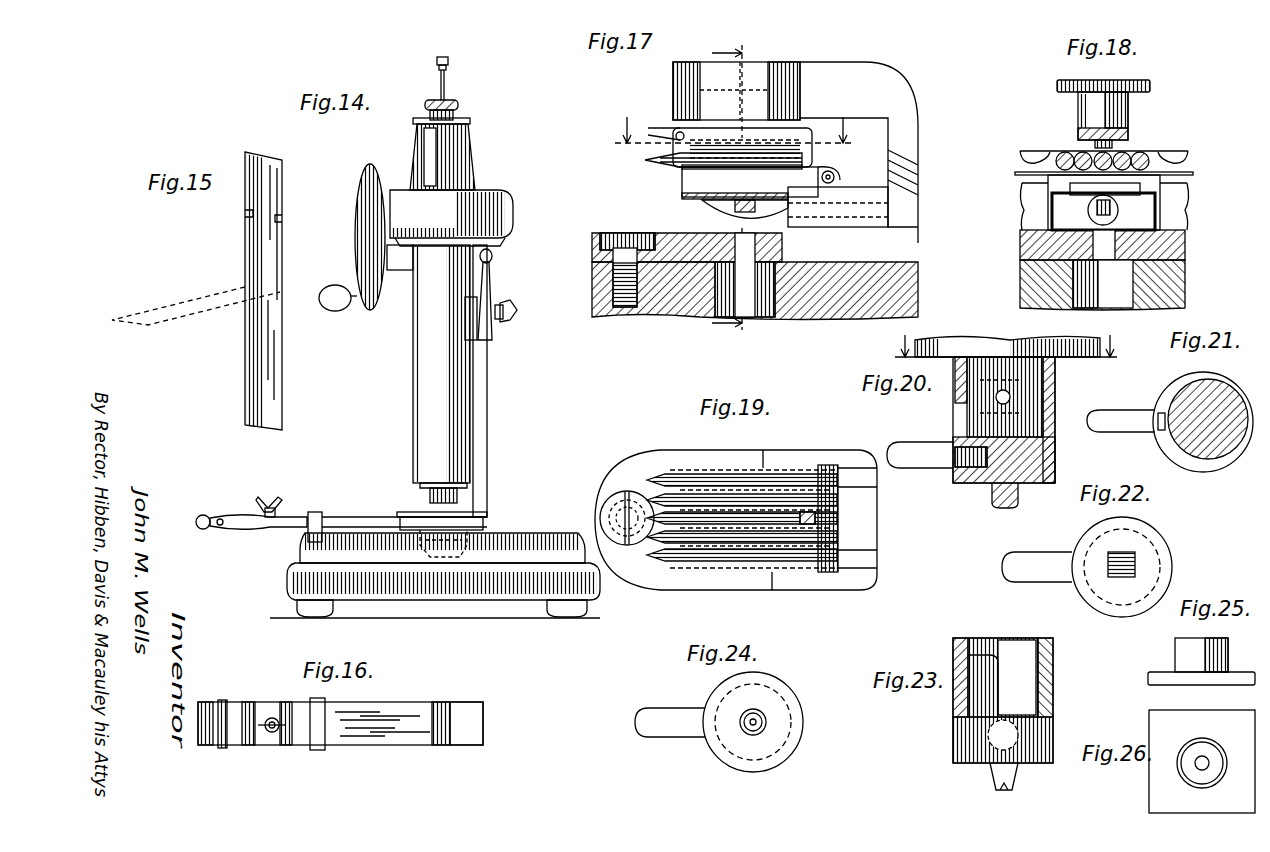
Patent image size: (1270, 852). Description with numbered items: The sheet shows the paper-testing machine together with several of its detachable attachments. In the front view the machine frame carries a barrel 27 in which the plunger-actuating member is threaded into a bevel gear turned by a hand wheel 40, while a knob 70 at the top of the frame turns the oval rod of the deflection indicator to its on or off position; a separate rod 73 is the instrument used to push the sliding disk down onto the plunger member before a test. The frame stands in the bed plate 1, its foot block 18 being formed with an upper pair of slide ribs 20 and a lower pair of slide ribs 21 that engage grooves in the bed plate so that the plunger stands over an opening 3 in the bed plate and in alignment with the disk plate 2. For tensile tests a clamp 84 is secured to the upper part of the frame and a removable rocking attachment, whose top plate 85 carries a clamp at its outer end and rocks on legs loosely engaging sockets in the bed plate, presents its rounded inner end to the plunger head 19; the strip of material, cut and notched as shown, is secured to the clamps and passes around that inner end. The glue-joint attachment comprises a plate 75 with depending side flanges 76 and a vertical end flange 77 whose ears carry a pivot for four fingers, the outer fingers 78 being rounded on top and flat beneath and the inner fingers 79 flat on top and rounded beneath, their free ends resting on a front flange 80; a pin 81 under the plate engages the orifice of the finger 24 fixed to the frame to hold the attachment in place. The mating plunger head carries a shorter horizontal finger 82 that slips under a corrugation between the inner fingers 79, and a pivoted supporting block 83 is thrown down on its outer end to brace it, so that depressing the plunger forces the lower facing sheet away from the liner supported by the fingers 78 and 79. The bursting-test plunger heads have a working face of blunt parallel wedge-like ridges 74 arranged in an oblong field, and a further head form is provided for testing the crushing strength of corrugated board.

In FIG. 14, the base 1 is at (433, 575).
In FIG. 17, the base 1 is at (592, 292).
In FIG. 18, the base 1 is at (1020, 288).
In FIG. 19, the base 1 is at (812, 452).
In FIG. 17, the disk plate 2 is at (592, 246).
In FIG. 18, the disk plate 2 is at (1185, 246).
In FIG. 19, the disk plate 2 is at (655, 452).
In FIG. 17, the slot 3 is at (745, 250).
In FIG. 17, the arm 18 is at (905, 92).
In FIG. 14, the block 19 is at (460, 496).
In FIG. 14, the upper slide ribs 20 is at (443, 543).
In FIG. 14, the lower slide ribs 21 is at (443, 555).
In FIG. 20, the lower slide ribs 21 is at (1004, 345).
In FIG. 17, the orificed finger 24 is at (725, 222).
In FIG. 18, the orificed finger 24 is at (1095, 216).
In FIG. 19, the orificed finger 24 is at (700, 522).
In FIG. 14, the barrel 27 is at (413, 401).
In FIG. 17, the barrel 27 is at (673, 90).
In FIG. 20, the barrel 27 is at (970, 340).
In FIG. 14, the hand wheel 40 is at (366, 271).
In FIG. 14, the knob 70 is at (460, 106).
In FIG. 14, the rod 73 is at (446, 90).
In FIG. 20, the stud 74 is at (1007, 509).
In FIG. 22, the stud 74 is at (1137, 566).
In FIG. 23, the stud 74 is at (1003, 791).
In FIG. 17, the plate 75 is at (682, 197).
In FIG. 18, the plate 75 is at (1070, 190).
In FIG. 17, the supporting side flanges 76 is at (700, 222).
In FIG. 18, the supporting side flanges 76 is at (1052, 219).
In FIG. 17, the vertical flange 77 is at (833, 172).
In FIG. 18, the vertical flange 77 is at (1160, 183).
In FIG. 19, the vertical flange 77 is at (838, 520).
In FIG. 18, the outer fingers 78 is at (1058, 152).
In FIG. 19, the outer fingers 78 is at (690, 476).
In FIG. 17, the inner fingers 79 is at (646, 161).
In FIG. 18, the inner fingers 79 is at (1080, 150).
In FIG. 19, the inner fingers 79 is at (725, 498).
In FIG. 17, the vertical flange 80 is at (682, 183).
In FIG. 19, the vertical flange 80 is at (652, 568).
In FIG. 17, the pin 81 is at (710, 205).
In FIG. 18, the pin 81 is at (1118, 208).
In FIG. 17, the horizontal finger 82 is at (682, 167).
In FIG. 18, the horizontal finger 82 is at (1120, 148).
In FIG. 19, the horizontal finger 82 is at (650, 500).
In FIG. 17, the pivoted supporting block 83 is at (673, 148).
In FIG. 14, the clamp 84 is at (495, 292).
In FIG. 14, the top plate 85 is at (371, 515).
In FIG. 16, the top plate 85 is at (400, 704).